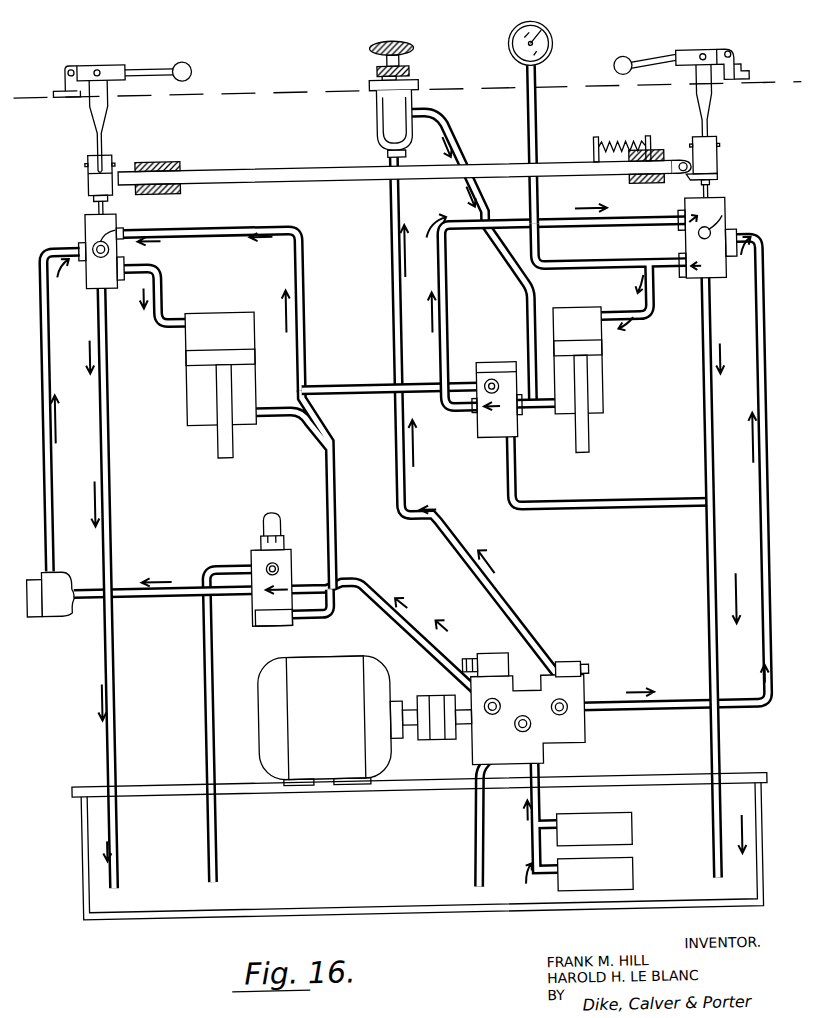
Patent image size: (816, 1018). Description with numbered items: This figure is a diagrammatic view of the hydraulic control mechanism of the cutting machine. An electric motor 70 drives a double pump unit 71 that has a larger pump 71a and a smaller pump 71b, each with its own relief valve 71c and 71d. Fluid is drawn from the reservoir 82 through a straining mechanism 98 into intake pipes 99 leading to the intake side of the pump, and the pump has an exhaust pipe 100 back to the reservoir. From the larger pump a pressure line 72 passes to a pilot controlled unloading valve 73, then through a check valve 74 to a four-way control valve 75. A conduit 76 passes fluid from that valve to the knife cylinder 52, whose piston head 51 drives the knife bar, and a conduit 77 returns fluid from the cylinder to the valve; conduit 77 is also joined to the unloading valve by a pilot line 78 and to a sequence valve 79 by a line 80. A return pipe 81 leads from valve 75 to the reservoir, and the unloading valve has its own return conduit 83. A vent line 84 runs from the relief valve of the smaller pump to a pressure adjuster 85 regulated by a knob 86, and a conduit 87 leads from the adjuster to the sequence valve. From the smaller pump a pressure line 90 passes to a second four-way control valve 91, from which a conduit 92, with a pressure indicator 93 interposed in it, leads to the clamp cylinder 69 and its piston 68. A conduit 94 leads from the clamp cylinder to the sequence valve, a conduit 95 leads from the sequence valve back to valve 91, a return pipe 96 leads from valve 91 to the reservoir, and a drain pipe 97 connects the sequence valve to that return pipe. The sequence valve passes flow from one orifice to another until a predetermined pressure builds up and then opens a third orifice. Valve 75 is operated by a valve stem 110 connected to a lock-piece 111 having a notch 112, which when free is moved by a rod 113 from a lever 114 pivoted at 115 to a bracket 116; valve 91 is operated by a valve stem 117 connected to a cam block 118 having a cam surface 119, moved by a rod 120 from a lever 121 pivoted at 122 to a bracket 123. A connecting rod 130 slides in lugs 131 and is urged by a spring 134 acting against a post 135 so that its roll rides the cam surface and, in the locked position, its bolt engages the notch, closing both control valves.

The piston head 51 is at (203, 345).
The hydraulic cylinder 52 is at (192, 380).
The piston 68 is at (601, 355).
The hydraulic cylinder 69 is at (600, 384).
The electric motor 70 is at (332, 664).
The pump 71 is at (459, 758).
The larger pump 71a is at (516, 682).
The smaller pump 71b is at (565, 699).
The relief valve 71c is at (468, 659).
The relief valve 71d is at (557, 668).
The pressure line 72 is at (53, 481).
The pilot controlled unloading valve 73 is at (249, 551).
The check valve 74 is at (55, 563).
The four-way control valve 75 is at (97, 283).
The conduit 76 is at (155, 267).
The conduit 77 is at (309, 310).
The pilot line 78 is at (325, 480).
The sequence valve 79 is at (497, 374).
The line 80 is at (348, 387).
The return pipe 81 is at (111, 431).
The reservoir 82 is at (137, 894).
The return conduit 83 is at (199, 665).
The vent line 84 is at (518, 609).
The pressure adjuster 85 is at (403, 115).
The knob 86 is at (410, 45).
The conduit 87 is at (458, 126).
The pressure line 90 is at (770, 540).
The four-way control valve 91 is at (692, 210).
The conduit 92 is at (686, 267).
The pressure indicator 93 is at (565, 33).
The conduit 94 is at (541, 420).
The conduit 95 is at (454, 296).
The return pipe 96 is at (710, 410).
The drain pipe 97 is at (630, 510).
The straining mechanism 98 is at (626, 838).
The intake pipes 99 is at (523, 847).
The exhaust pipe 100 is at (463, 833).
The valve stem 110 is at (112, 201).
The lock-piece 111 is at (99, 168).
The notch 112 is at (98, 188).
The rod 113 is at (110, 128).
The lever 114 is at (161, 63).
The pivot 115 is at (79, 63).
The bracket 116 is at (71, 92).
The valve stem 117 is at (716, 199).
The cam block 118 is at (725, 166).
The cam surface 119 is at (698, 168).
The rod 120 is at (720, 124).
The lever 121 is at (650, 62).
The pivot 122 is at (742, 57).
The bracket 123 is at (754, 74).
The connecting rod 130 is at (299, 171).
The lugs 131 is at (177, 156).
The spring 134 is at (620, 144).
The post 135 is at (604, 138).